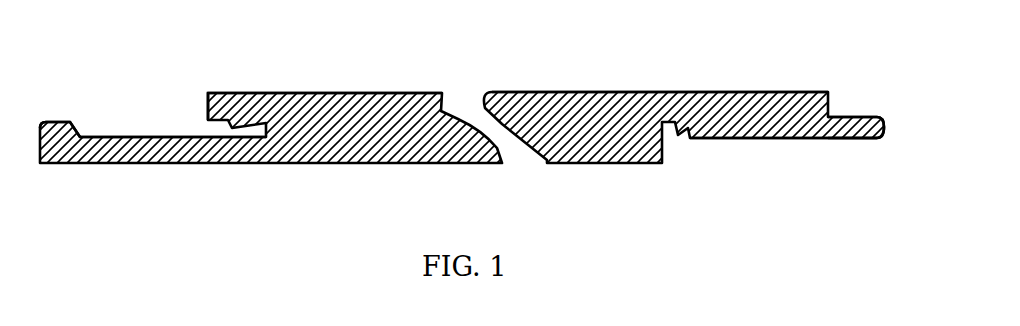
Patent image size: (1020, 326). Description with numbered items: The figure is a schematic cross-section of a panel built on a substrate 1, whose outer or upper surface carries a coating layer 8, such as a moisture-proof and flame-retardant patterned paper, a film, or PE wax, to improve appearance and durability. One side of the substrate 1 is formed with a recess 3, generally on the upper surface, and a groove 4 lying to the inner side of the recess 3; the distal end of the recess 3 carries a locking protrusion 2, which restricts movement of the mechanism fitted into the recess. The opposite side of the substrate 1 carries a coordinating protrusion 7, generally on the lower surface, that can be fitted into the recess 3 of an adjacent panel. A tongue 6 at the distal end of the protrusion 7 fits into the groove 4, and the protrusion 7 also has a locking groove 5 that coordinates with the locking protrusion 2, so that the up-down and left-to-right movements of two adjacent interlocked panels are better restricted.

The substrate 1 is at (327, 115).
The locking protrusion 2 is at (68, 117).
The recess 3 is at (153, 133).
The groove 4 is at (268, 93).
The locking groove 5 is at (695, 92).
The tongue 6 is at (833, 138).
The protrusion 7 is at (735, 140).
The coating layer 8 is at (587, 91).